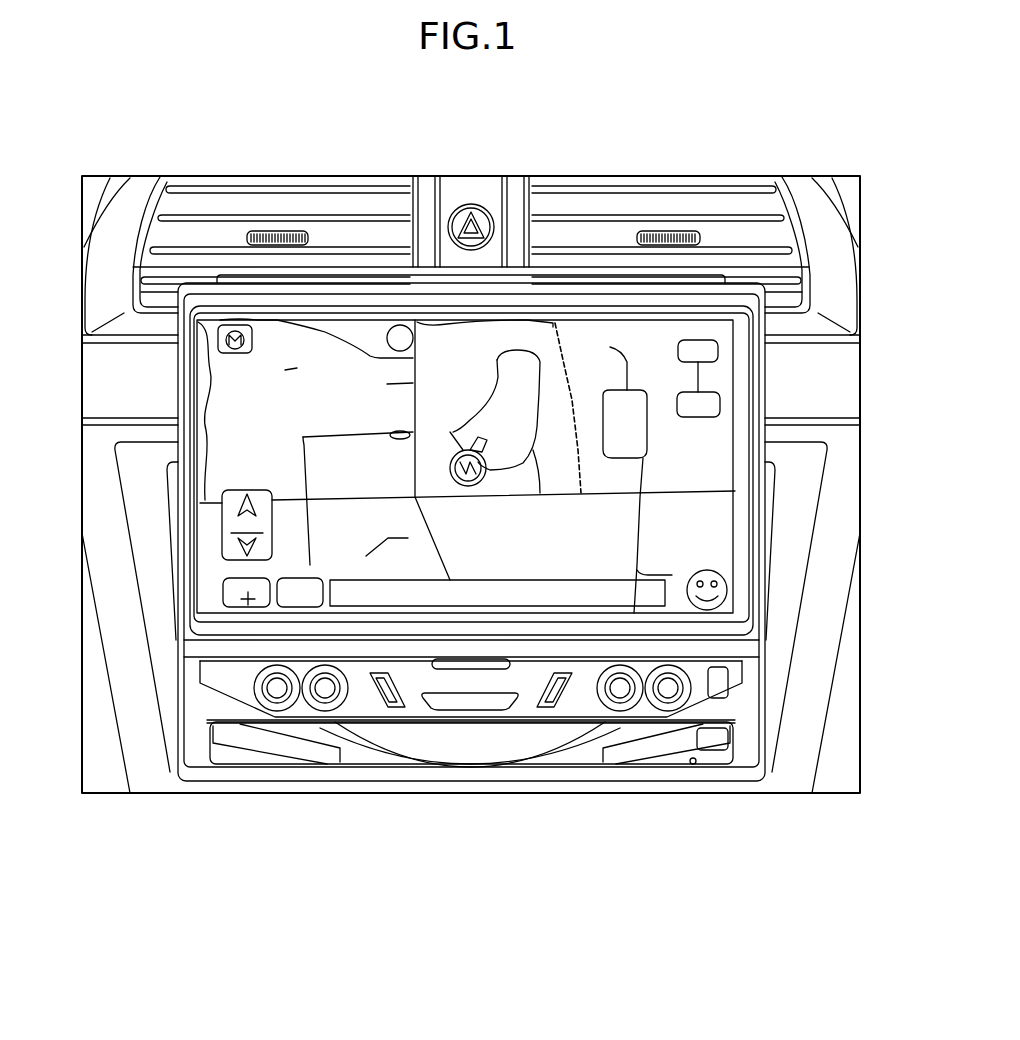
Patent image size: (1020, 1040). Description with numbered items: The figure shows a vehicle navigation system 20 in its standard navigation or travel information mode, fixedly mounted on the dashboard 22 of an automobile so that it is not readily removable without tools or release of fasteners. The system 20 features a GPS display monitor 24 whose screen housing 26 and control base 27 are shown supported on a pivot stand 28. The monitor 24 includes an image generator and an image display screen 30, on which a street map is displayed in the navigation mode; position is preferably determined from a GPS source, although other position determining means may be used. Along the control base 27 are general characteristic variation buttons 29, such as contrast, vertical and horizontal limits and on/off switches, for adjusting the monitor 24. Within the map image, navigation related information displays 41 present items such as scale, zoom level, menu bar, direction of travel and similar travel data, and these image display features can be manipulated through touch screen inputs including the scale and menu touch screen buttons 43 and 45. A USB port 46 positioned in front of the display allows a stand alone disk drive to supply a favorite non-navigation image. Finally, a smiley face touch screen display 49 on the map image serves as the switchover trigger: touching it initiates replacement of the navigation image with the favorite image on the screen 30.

The vehicle navigation system 20 is at (189, 381).
The dashboard 22 is at (840, 404).
The GPS display monitor 24 is at (620, 325).
The screen housing 26 is at (743, 658).
The control base 27 is at (742, 693).
The pivot stand 28 is at (748, 750).
The general characteristic variation buttons 29 is at (278, 690).
The image display screen 30 is at (700, 438).
The navigation related information displays 41 is at (240, 543).
The scale touch screen button 43 is at (238, 496).
The menu touch screen button 45 is at (238, 556).
The USB port 46 is at (722, 692).
The smiley face touch screen display 49 is at (714, 571).